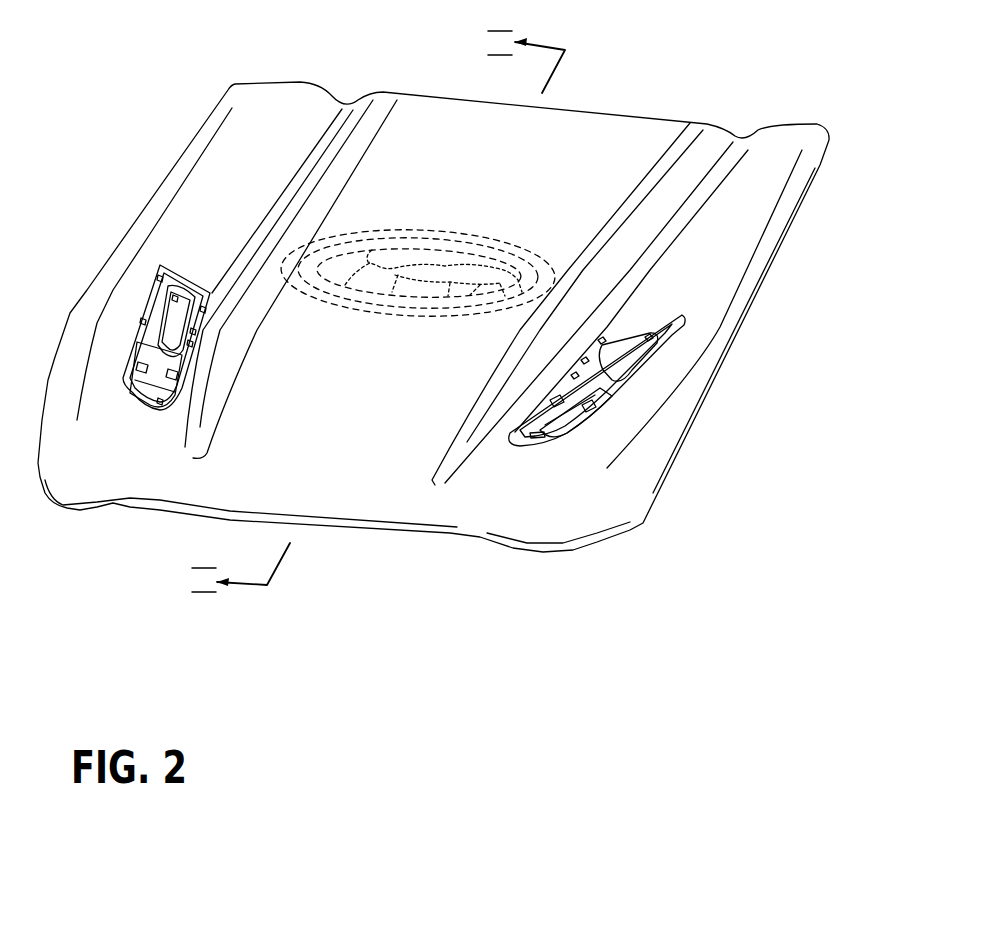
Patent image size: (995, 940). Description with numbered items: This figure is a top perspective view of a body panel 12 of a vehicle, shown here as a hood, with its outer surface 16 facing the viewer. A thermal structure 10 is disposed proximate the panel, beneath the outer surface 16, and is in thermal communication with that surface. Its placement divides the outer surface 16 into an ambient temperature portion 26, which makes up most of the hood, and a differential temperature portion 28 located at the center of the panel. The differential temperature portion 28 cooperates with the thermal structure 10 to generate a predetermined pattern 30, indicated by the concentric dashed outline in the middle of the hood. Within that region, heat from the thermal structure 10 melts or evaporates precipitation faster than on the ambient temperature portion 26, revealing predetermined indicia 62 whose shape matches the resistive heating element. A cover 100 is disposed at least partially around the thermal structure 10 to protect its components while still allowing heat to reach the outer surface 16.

The thermal structure 10 is at (433, 327).
The body panel 12 is at (87, 457).
The outer surface 16 is at (298, 445).
The ambient temperature portion 26 is at (558, 150).
The differential temperature portion 28 is at (440, 290).
The predetermined pattern 30 is at (538, 253).
The predetermined indicia 62 is at (478, 312).
The cover 100 is at (567, 473).